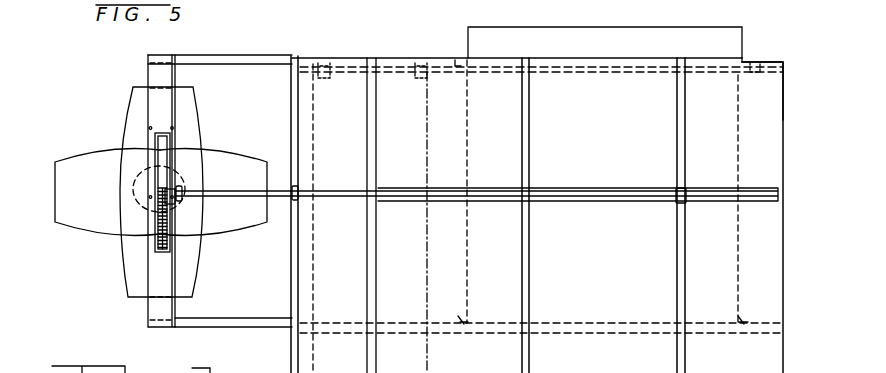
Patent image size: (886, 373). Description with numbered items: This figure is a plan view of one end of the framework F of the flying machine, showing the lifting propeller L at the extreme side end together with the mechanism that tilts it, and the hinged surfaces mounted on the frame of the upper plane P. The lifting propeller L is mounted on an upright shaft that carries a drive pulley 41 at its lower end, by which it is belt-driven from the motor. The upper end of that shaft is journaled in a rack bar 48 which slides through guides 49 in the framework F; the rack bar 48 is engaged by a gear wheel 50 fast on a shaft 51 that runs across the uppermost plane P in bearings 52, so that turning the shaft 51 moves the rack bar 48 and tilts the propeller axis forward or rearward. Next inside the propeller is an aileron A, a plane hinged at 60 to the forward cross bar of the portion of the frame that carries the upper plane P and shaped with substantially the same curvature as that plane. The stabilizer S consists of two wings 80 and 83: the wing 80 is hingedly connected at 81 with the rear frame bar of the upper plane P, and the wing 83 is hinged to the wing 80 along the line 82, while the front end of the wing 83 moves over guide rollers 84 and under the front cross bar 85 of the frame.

The drive pulley 41 is at (134, 200).
The rack bar 48 is at (154, 237).
The guides 49 is at (152, 155).
The gear wheel 50 is at (150, 185).
The shaft 51 is at (212, 190).
The bearings 52 is at (182, 190).
The hinge 60 is at (323, 63).
The wing 80 is at (478, 259).
The hinge connection 81 is at (462, 320).
The hinge line 82 is at (598, 190).
The wing 83 is at (477, 130).
The guide rollers 84 is at (497, 63).
The front cross bar 85 is at (776, 68).
The lifting propeller L is at (144, 192).
The aileron A is at (353, 80).
The stabilizer S is at (605, 42).
The framework F is at (530, 148).
The upper plane P is at (728, 80).